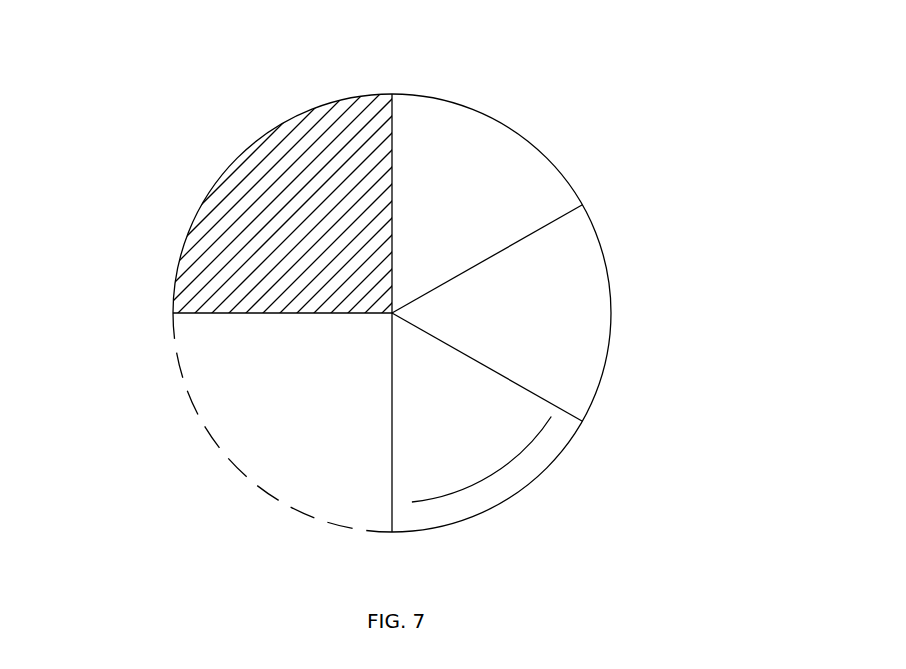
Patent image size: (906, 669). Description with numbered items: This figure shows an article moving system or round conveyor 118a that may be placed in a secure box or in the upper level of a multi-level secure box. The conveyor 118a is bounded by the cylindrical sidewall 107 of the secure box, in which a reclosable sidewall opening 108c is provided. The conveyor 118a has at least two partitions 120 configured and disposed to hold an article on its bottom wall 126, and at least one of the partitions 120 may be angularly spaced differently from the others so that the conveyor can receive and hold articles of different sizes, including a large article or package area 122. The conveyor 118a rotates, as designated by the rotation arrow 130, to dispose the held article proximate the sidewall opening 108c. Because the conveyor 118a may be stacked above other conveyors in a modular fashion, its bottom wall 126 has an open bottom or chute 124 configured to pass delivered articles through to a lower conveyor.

The sidewall 107 is at (298, 108).
The open bottom or chute 124 is at (287, 217).
The bottom wall 126 is at (467, 178).
The conveyor or carousel 118a is at (547, 292).
The partition 120 is at (503, 375).
The large article or package area 122 is at (303, 412).
The reclosable sidewall opening 108c is at (285, 504).
The rotation 130 is at (490, 480).